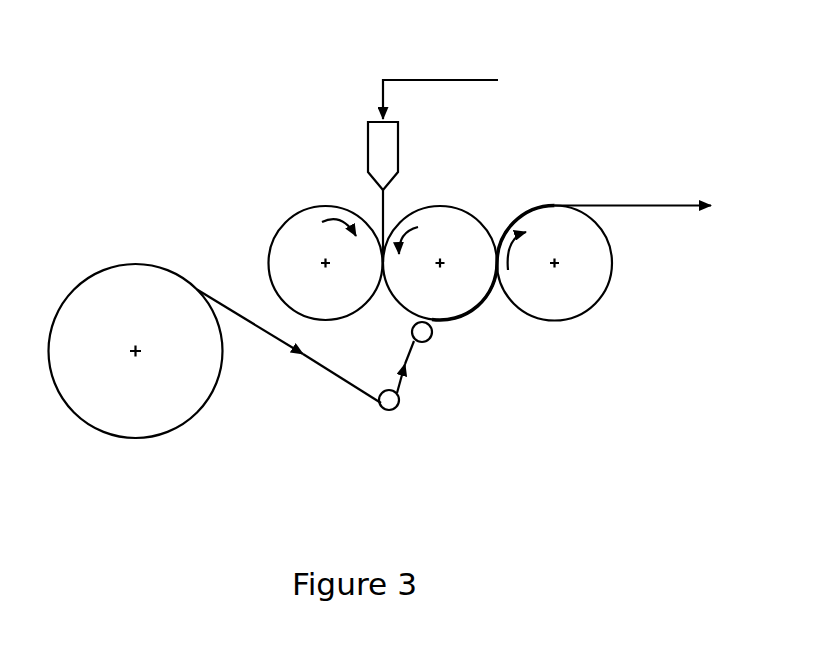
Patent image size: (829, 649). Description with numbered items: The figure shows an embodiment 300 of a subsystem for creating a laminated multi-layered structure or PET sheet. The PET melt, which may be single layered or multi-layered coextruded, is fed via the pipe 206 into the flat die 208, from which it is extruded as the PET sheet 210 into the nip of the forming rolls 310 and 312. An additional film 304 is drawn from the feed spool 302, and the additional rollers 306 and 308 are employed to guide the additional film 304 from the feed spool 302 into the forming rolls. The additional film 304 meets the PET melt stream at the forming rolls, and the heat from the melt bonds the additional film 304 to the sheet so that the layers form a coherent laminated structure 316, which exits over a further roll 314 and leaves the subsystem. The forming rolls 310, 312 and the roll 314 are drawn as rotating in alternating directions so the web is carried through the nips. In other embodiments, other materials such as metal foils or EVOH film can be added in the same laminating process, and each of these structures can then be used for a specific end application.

The pipe 206 is at (442, 80).
The flat die 208 is at (398, 143).
The PET sheet 210 is at (385, 192).
The embodiment of a subsystem to create a laminated multi-layered structure 300 is at (617, 95).
The feed spool 302 is at (137, 438).
The additional film 304 is at (265, 338).
The additional roller 306 is at (390, 410).
The additional roller 308 is at (428, 336).
The forming roll 310 is at (285, 240).
The forming roll 312 is at (467, 305).
The third roller 314 is at (590, 305).
The coherent laminated structure 316 is at (650, 206).